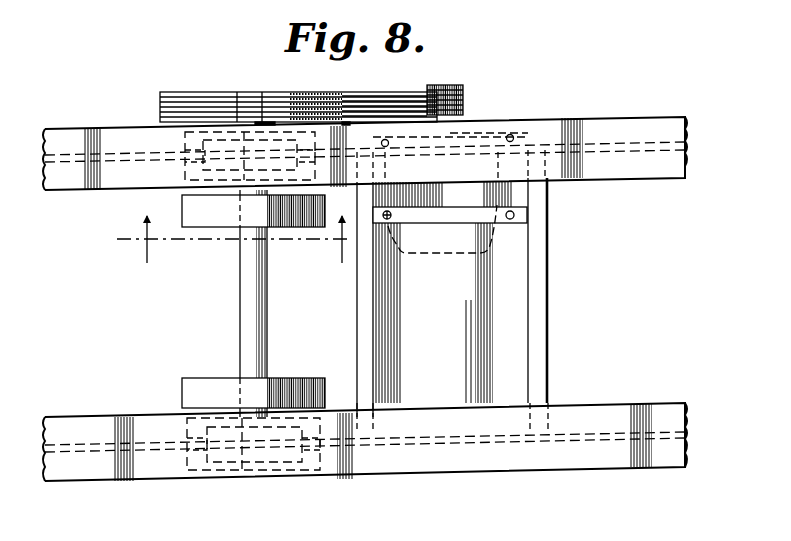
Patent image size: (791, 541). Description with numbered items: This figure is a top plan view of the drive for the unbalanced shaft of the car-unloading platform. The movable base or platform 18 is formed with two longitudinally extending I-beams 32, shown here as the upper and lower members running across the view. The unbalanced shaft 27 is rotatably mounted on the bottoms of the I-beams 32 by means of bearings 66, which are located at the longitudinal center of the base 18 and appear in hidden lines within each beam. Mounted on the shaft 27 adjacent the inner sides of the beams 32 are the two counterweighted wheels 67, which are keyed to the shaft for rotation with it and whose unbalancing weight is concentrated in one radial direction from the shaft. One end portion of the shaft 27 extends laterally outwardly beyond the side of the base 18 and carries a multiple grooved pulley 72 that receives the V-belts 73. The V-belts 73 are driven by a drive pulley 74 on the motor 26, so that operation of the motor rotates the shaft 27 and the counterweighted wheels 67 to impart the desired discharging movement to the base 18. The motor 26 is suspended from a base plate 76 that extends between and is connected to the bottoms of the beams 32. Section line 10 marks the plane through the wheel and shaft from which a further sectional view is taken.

The section line 10- 10 is at (229, 246).
The movable base or platform 18 is at (591, 179).
The motor 26 is at (427, 253).
The unbalanced shaft 27 is at (240, 307).
The I-beams 32 is at (583, 117).
The bearings 66 is at (185, 142).
The counterweighted wheels 67 is at (213, 218).
The multiple grooved pulley 72 is at (213, 94).
The V-belts 73 is at (366, 112).
The drive pulley 74 is at (439, 87).
The base plate 76 is at (517, 281).